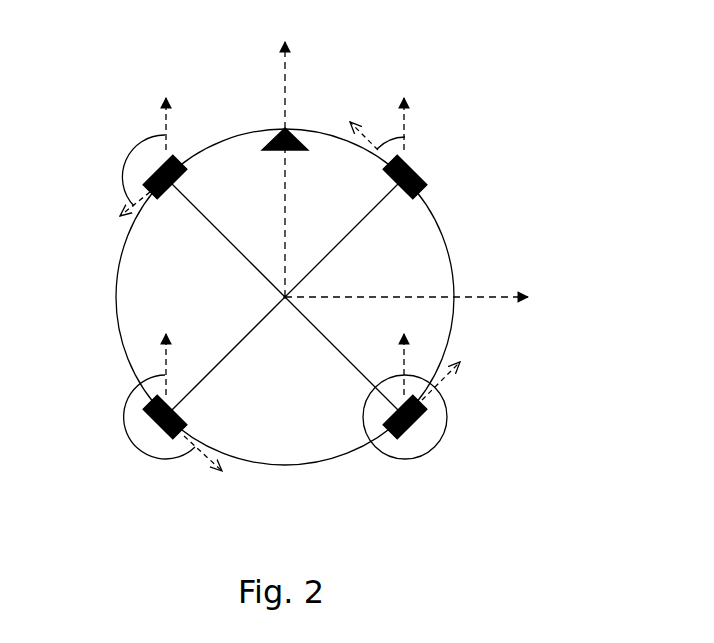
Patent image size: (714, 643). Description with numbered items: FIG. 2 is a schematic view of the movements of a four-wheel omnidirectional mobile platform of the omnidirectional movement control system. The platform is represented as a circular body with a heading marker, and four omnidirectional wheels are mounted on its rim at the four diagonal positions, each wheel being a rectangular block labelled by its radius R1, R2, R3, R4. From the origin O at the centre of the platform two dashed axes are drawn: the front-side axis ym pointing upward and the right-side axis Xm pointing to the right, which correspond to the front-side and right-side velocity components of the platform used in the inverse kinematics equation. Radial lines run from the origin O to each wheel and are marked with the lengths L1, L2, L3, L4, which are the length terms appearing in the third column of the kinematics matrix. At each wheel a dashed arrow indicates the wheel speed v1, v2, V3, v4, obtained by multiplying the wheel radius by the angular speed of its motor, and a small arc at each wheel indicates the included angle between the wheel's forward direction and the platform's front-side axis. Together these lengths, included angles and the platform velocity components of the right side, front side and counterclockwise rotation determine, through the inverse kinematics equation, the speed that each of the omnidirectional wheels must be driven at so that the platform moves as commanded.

The origin of the platform coordinate frame O is at (277, 297).
The front-side velocity axis ym is at (285, 157).
The right-side velocity axis Xm is at (419, 298).
The length L1 is at (345, 237).
The length L2 is at (225, 237).
The length L3 is at (225, 357).
The length L4 is at (345, 357).
The radius of omnidirectional wheel R1 is at (414, 134).
The radius of omnidirectional wheel R2 is at (170, 134).
The radius of omnidirectional wheel R3 is at (171, 386).
The radius of omnidirectional wheel R4 is at (405, 386).
The speed of omnidirectional wheel v1 is at (358, 125).
The speed of omnidirectional wheel v2 is at (121, 210).
The speed of omnidirectional wheel V3 is at (211, 464).
The speed of omnidirectional wheel v4 is at (447, 372).
The omnidirectional wheels is at (420, 165).